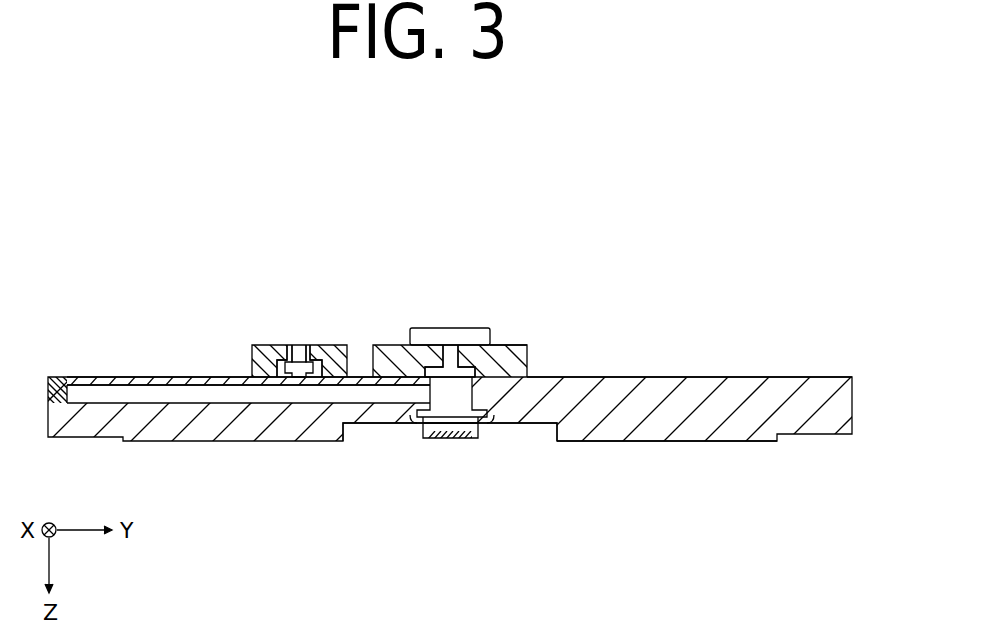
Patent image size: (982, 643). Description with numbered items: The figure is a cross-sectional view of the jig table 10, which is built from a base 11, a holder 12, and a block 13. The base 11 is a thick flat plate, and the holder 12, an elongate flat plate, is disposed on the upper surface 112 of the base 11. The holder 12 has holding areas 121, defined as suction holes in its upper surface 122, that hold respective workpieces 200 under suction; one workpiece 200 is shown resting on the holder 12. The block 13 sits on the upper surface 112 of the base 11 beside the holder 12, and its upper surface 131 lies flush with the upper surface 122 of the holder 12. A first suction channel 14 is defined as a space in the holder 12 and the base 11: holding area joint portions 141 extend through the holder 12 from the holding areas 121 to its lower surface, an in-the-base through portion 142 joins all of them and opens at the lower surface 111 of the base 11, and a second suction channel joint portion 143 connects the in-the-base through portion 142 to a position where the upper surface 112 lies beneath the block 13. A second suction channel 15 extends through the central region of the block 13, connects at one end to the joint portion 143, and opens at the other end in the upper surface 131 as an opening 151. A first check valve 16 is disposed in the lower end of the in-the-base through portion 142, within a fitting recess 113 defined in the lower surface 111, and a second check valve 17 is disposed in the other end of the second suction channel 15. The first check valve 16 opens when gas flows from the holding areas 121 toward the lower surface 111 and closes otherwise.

The jig table 10 is at (479, 170).
The base 11 is at (454, 414).
The lower surface of the base 111 is at (650, 441).
The upper surface of the base 112 is at (792, 377).
The fitting recess 113 is at (548, 441).
The holder 12 is at (528, 357).
The holding area 121 is at (463, 341).
The upper surface of the holder 122 is at (511, 341).
The block 13 is at (251, 353).
The upper surface of the block 131 is at (273, 346).
The first suction channel 14 is at (493, 222).
The holding area joint portion 141 is at (466, 396).
The in-the-base through portion 142 is at (450, 360).
The second suction channel joint portion 143 is at (360, 395).
The second suction channel 15 is at (312, 347).
The opening 151 is at (293, 346).
The first check valve 16 is at (480, 438).
The second check valve 17 is at (300, 382).
The workpiece 200 is at (491, 328).